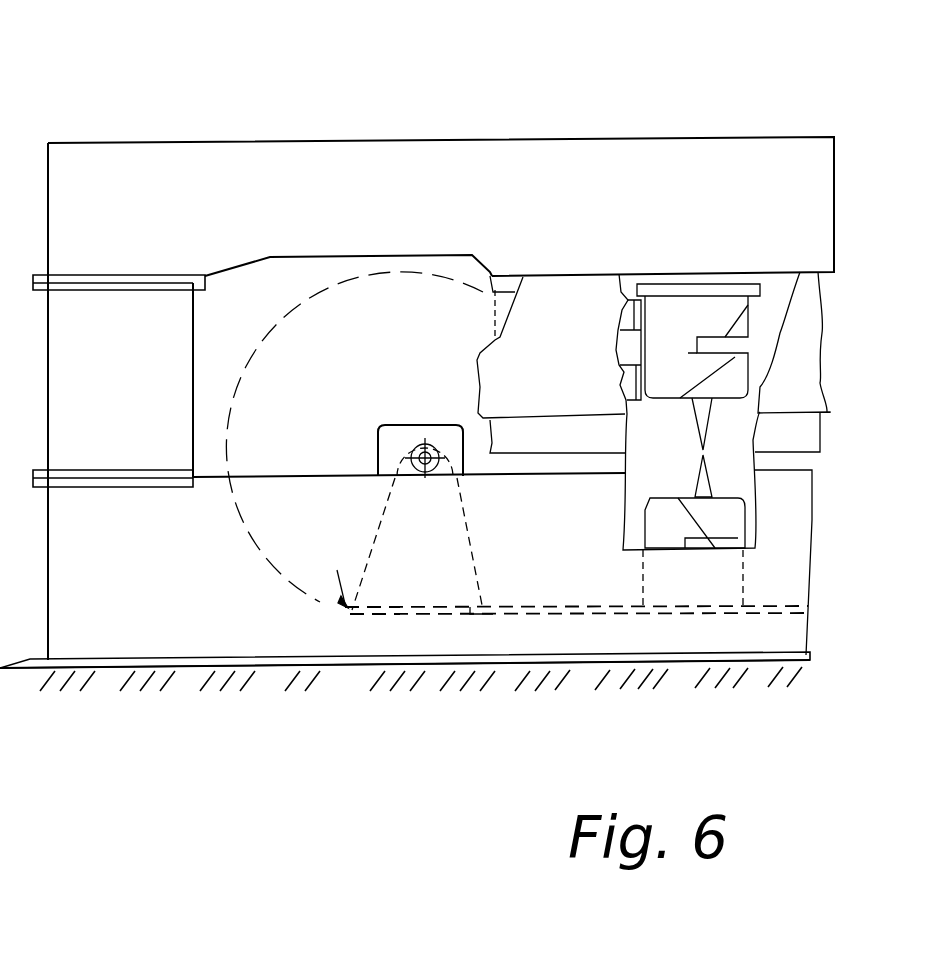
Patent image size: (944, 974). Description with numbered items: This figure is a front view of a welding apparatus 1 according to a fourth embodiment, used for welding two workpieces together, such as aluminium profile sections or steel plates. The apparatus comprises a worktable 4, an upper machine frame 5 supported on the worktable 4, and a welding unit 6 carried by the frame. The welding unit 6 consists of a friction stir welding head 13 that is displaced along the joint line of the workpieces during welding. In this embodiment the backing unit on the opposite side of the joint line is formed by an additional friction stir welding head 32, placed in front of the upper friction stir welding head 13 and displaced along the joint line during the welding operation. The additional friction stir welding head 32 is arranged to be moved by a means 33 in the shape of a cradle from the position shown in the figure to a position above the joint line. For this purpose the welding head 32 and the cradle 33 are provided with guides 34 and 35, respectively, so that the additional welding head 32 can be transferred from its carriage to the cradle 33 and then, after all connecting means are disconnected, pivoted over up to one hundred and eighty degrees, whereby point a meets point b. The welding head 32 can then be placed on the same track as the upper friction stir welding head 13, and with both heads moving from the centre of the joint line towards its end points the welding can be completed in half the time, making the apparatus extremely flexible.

The welding apparatus 1 is at (88, 140).
The worktable 4 is at (75, 586).
The upper machine frame 5 is at (206, 178).
The welding unit 6 is at (631, 290).
The friction stir welding head 13 is at (713, 307).
The additional friction stir welding head 32 is at (730, 520).
The cradle 33 is at (425, 472).
The guide 34 is at (604, 620).
The guide 35 is at (387, 618).